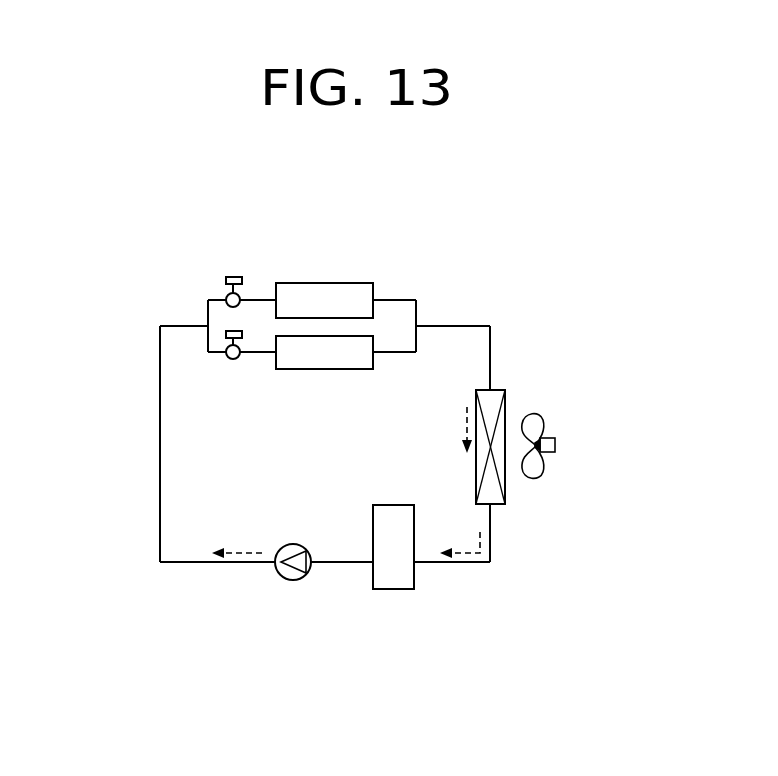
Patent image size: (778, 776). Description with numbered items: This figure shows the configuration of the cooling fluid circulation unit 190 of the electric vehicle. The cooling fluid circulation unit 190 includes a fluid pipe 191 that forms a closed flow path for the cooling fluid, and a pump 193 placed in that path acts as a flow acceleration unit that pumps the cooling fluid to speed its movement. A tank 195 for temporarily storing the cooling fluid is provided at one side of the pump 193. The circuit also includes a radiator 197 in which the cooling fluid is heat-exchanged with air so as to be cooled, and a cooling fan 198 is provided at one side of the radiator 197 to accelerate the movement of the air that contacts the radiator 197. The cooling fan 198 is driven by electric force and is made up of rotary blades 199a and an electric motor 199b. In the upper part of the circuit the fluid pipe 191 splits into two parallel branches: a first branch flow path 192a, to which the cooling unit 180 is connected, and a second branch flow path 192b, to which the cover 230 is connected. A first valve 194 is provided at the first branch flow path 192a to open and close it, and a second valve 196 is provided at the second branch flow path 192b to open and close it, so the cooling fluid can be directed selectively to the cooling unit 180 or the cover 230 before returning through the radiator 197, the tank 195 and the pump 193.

The cooling fluid circulation unit 190 is at (146, 258).
The fluid pipe 191 is at (160, 438).
The first branch flow path 192a is at (258, 300).
The second branch flow path 192b is at (258, 354).
The pump 193 is at (290, 580).
The first valve 194 is at (233, 277).
The tank 195 is at (398, 589).
The second valve 196 is at (226, 357).
The radiator 197 is at (505, 398).
The cooling fan 198 is at (628, 423).
The rotary blades 199a is at (538, 470).
The electric motor 199b is at (555, 443).
The cooling unit 180 is at (307, 283).
The cover 230 is at (339, 336).